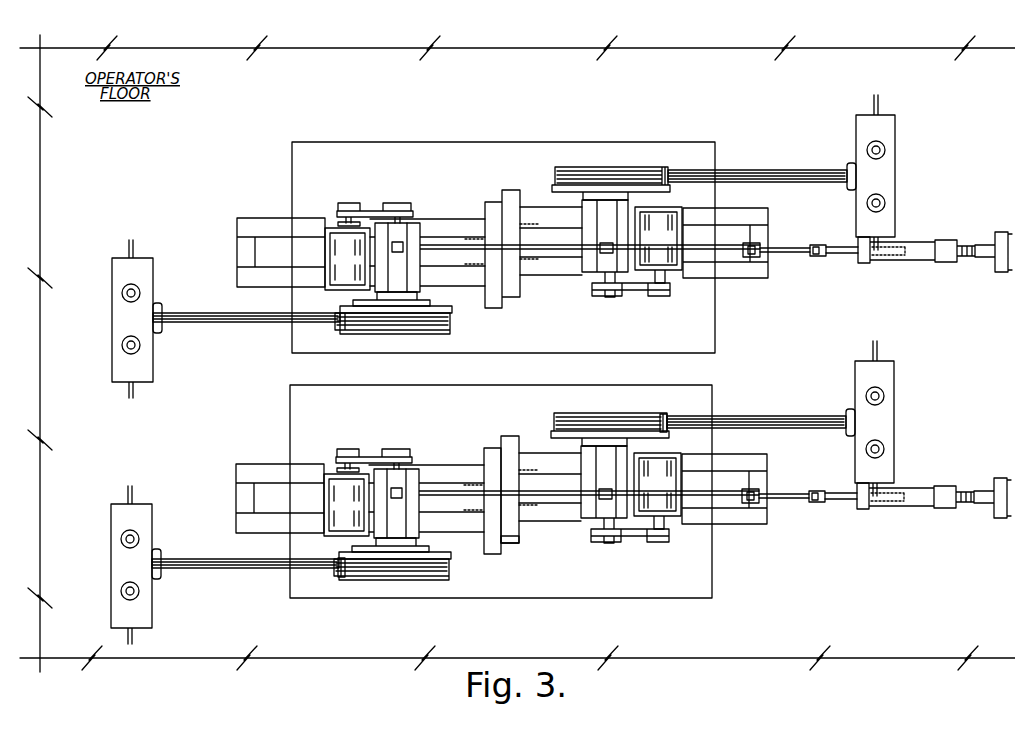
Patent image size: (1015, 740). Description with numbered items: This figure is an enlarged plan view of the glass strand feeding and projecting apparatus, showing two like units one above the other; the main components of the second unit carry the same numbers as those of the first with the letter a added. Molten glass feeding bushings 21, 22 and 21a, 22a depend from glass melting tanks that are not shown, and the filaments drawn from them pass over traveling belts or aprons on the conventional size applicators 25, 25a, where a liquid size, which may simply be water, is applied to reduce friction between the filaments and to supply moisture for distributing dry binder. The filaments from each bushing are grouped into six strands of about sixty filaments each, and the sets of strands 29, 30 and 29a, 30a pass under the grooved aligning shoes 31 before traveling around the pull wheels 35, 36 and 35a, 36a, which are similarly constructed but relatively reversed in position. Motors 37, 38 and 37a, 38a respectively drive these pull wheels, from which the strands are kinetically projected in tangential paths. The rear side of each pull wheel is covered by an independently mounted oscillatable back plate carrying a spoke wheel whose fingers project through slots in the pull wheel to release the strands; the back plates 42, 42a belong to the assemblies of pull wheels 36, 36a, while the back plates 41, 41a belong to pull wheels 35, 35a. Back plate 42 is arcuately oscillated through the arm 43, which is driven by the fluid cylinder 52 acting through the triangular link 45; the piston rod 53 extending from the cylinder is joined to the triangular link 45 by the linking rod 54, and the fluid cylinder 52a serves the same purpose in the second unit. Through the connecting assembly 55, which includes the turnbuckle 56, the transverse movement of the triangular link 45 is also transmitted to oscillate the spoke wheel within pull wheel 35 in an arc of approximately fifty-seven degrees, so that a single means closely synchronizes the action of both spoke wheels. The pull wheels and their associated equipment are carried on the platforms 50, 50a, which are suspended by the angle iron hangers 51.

The molten glass feeding bushing 21 is at (114, 566).
The molten glass feeding bushing 21a is at (117, 318).
The molten glass feeding bushing 22 is at (888, 418).
The molten glass feeding bushing 22a is at (893, 175).
The size applicator 25 is at (158, 572).
The size applicator 25a is at (158, 325).
The set of strands 29 is at (229, 571).
The set of strands 29a is at (228, 325).
The set of strands 30 is at (775, 418).
The set of strands 30a is at (788, 170).
The aligning shoe 31 is at (336, 572).
The pull wheel 35 is at (390, 576).
The pull wheel 35a is at (390, 333).
The pull wheel 36 is at (600, 412).
The pull wheel 36a is at (600, 167).
The motor 37 is at (330, 490).
The motor 37a is at (330, 243).
The motor 38 is at (680, 483).
The motor 38a is at (682, 238).
The back plate 41 is at (441, 552).
The back plate 41a is at (430, 306).
The back plate 42 is at (560, 440).
The back plate 42a is at (562, 194).
The arm 43 is at (600, 497).
The triangular link 45 is at (742, 497).
The platform 50 is at (446, 482).
The platform 50a is at (460, 234).
The angle iron hangers 51 is at (481, 470).
The fluid cylinder 52 is at (928, 507).
The fluid cylinder 52a is at (922, 256).
The piston rod 53 is at (834, 506).
The linking rod 54 is at (783, 498).
The connecting assembly 55 is at (546, 496).
The turnbuckle 56 is at (504, 542).